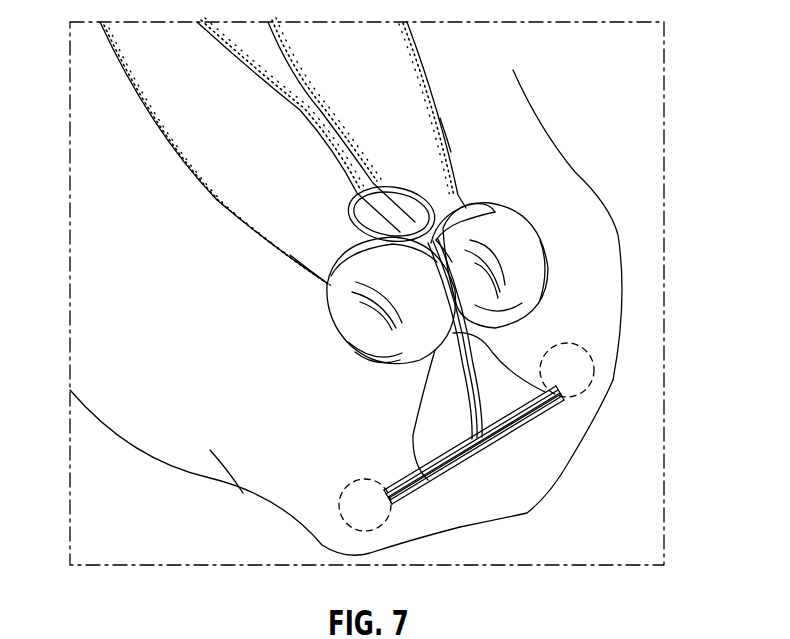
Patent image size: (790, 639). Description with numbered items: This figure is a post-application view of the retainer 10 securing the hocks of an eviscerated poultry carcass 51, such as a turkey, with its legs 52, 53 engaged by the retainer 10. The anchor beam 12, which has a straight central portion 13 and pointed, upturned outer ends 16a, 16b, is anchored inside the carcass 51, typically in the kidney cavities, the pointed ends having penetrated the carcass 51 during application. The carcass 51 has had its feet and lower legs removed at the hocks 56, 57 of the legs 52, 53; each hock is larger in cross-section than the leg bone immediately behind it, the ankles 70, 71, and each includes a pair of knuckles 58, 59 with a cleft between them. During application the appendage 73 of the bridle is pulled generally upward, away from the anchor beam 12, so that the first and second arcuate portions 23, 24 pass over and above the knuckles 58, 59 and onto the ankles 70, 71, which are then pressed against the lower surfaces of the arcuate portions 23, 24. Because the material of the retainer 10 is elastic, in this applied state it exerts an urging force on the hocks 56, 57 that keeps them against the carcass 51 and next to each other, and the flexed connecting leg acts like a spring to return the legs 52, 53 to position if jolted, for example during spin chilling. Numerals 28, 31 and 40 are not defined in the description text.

The retainer 10 is at (325, 292).
The anchor beam 12 is at (458, 494).
The straight central portion 13 is at (485, 455).
The outer end 16a is at (383, 497).
The outer end 16b is at (572, 345).
The first arcuate portion 23 is at (448, 220).
The second arcuate portion 24 is at (365, 240).
The second bulb 28 is at (500, 243).
The collar 31 is at (463, 206).
The finger 40 is at (447, 114).
The carcass 51 is at (140, 364).
The leg 52 is at (355, 94).
The leg 53 is at (285, 164).
The hock 56 is at (433, 150).
The hock 57 is at (248, 229).
The knuckle 58 is at (548, 270).
The knuckle 59 is at (374, 364).
The ankle 70 is at (458, 196).
The ankle 71 is at (315, 263).
The appendage 73 is at (402, 172).